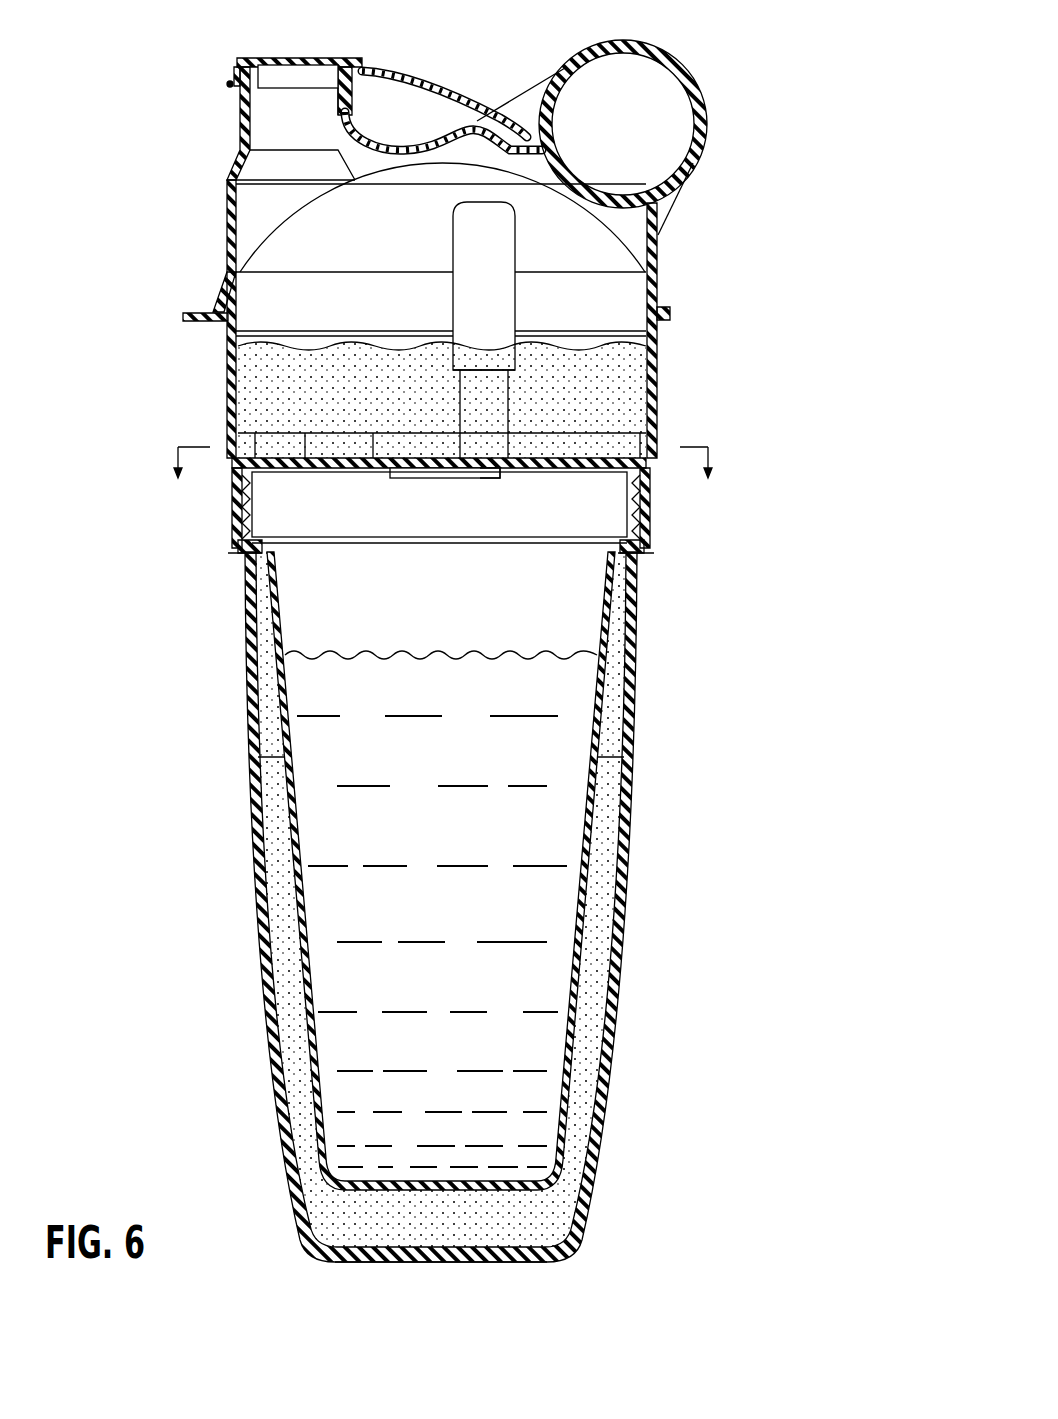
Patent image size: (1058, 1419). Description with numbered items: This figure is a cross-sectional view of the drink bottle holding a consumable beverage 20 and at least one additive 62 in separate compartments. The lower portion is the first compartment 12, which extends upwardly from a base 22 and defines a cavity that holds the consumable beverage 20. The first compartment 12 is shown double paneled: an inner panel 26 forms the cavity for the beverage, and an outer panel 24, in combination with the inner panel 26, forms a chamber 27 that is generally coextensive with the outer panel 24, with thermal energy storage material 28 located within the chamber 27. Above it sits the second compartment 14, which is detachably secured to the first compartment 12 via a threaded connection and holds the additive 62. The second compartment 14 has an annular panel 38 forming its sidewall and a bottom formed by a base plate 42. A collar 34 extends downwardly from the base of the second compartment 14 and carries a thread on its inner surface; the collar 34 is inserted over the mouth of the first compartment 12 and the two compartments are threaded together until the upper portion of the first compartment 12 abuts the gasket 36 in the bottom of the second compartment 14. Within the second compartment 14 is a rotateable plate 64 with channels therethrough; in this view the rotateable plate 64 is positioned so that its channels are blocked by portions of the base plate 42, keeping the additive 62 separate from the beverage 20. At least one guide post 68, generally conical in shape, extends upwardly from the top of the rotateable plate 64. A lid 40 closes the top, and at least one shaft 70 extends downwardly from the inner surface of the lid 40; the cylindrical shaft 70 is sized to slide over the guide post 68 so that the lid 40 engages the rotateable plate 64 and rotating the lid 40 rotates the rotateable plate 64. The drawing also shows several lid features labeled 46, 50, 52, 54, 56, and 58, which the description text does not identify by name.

The first compartment 12 is at (633, 731).
The second compartment 14 is at (228, 345).
The consumable beverage 20 is at (432, 761).
The base 22 is at (440, 1256).
The outer panel 24 is at (622, 961).
The inner panel 26 is at (583, 894).
The chamber 27 is at (578, 1109).
The thermal energy storage material 28 is at (595, 1031).
The collar 34 is at (647, 528).
The gasket 36 is at (228, 476).
The annular panel 38 is at (655, 353).
The lid 40 is at (224, 218).
The base plate 42 is at (505, 472).
The plug 46 is at (387, 468).
The carry ring 50 is at (690, 77).
The tab 52 is at (200, 311).
The spout 54 is at (241, 118).
The cap 56 is at (283, 58).
The strap 58 is at (467, 90).
The additive 62 is at (278, 417).
The rotateable plate 64 is at (390, 463).
The guide post 68 is at (483, 397).
The shaft 70 is at (495, 242).